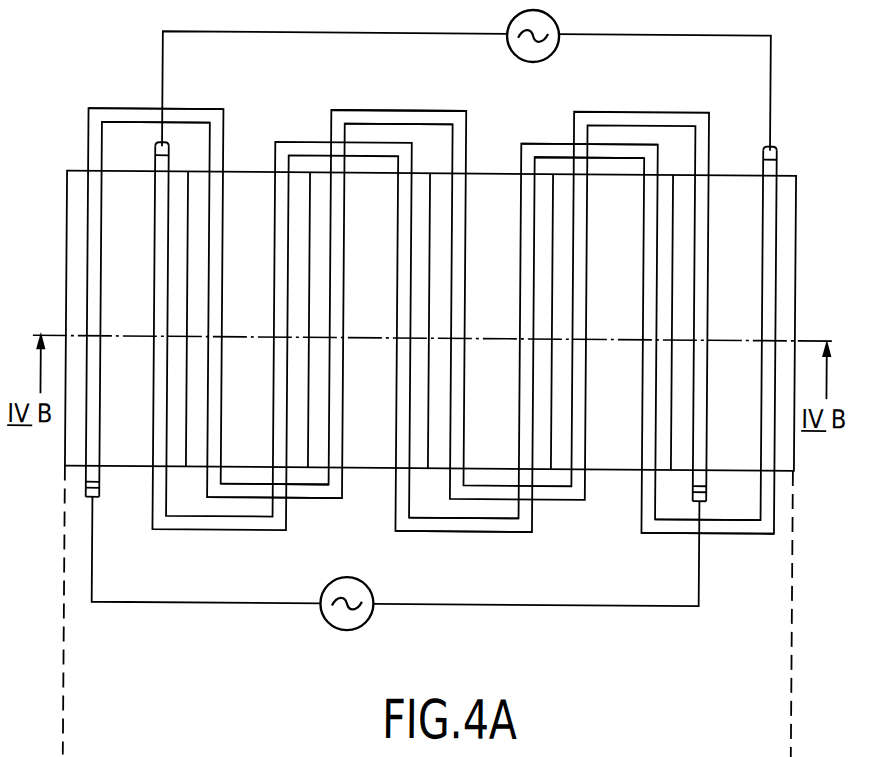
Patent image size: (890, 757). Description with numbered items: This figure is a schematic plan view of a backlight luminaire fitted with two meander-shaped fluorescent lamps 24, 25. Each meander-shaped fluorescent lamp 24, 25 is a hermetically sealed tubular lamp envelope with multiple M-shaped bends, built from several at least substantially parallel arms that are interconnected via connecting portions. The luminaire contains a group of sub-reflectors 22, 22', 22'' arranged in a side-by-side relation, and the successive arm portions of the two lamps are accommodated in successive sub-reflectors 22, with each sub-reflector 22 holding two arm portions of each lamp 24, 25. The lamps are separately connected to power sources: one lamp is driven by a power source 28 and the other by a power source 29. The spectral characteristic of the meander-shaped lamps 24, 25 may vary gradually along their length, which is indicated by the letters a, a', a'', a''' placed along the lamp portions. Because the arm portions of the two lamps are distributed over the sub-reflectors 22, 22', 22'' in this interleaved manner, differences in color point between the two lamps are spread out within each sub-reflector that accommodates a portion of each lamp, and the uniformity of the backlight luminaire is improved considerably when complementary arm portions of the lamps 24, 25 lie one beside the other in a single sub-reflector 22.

The sub-reflector 22 is at (409, 463).
The sub-reflector 22' is at (167, 318).
The sub-reflector 22'' is at (513, 349).
The meander-shaped fluorescent lamp 24 is at (89, 148).
The meander-shaped fluorescent lamp 25 is at (765, 172).
The power source 28 is at (558, 16).
The power source 29 is at (326, 623).
The spectral characteristic position a is at (431, 321).
The spectral characteristic position a' is at (431, 321).
The spectral characteristic position a'' is at (432, 317).
The spectral characteristic position a''' is at (431, 319).